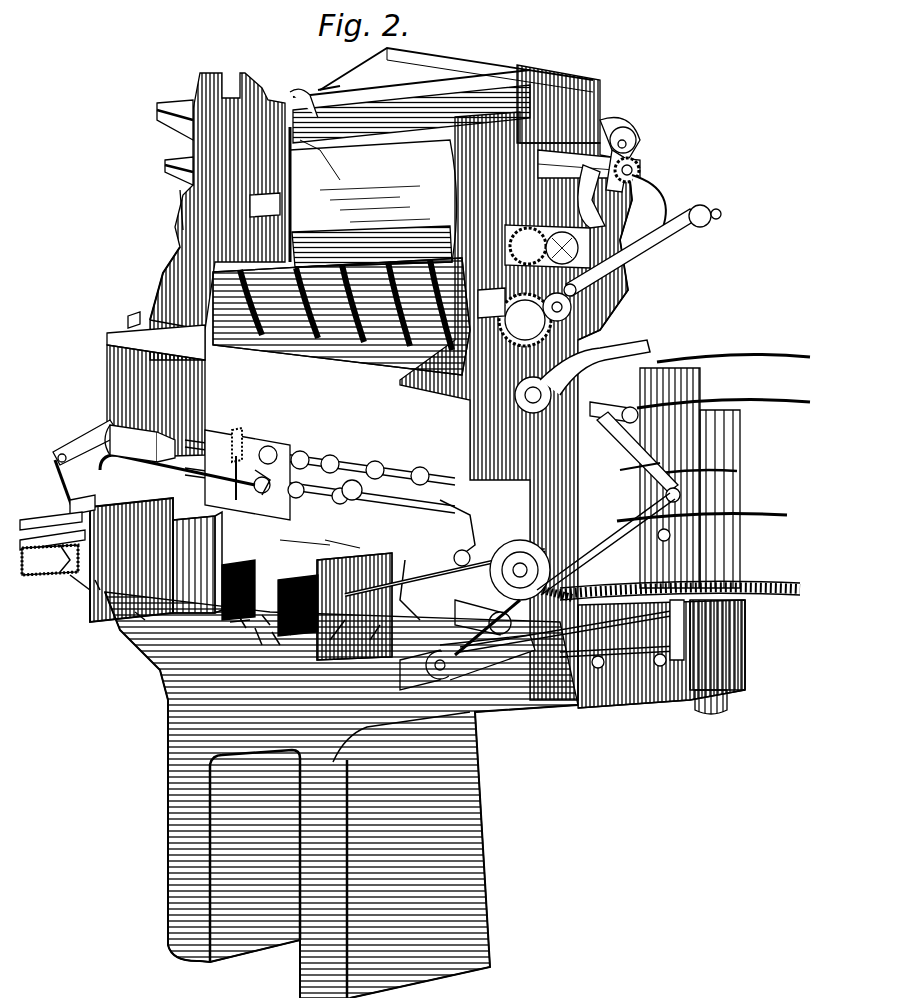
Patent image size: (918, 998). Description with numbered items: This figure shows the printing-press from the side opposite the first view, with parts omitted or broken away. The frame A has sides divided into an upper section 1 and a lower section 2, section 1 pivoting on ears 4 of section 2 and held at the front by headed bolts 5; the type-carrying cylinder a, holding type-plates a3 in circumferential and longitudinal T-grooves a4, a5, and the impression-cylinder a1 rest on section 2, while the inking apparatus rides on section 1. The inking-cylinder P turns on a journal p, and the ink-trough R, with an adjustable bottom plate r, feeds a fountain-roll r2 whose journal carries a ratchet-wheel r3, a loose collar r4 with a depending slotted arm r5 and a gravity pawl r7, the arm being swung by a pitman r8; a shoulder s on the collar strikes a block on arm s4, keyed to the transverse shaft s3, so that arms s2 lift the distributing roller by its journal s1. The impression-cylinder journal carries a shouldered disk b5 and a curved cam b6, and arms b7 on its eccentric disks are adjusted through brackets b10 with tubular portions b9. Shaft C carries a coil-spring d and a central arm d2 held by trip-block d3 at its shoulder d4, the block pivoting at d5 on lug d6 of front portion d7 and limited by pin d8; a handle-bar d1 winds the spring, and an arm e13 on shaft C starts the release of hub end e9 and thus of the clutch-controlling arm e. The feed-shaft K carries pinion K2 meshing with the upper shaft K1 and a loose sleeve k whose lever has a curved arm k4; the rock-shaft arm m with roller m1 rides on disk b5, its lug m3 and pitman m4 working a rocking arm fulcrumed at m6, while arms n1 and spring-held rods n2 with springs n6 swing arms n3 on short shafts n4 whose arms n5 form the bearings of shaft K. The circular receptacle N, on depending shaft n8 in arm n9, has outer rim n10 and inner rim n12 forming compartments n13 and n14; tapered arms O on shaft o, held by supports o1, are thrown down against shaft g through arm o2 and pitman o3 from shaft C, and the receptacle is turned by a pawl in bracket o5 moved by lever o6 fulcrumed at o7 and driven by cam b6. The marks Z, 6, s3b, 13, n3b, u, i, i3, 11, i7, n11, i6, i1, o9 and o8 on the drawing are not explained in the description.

The journal p is at (190, 190).
The upper section 1 is at (180, 205).
The type-carrying cylinder a is at (176, 262).
The ears 4 is at (150, 300).
The headed bolts 5 is at (128, 318).
The lower section 2 is at (110, 345).
The ink-trough R is at (460, 90).
The arms s2 is at (285, 98).
The shoulder s is at (300, 92).
The fountain-roll r2 is at (322, 88).
The inking-cylinder P is at (373, 197).
The transverse shaft s3 is at (320, 167).
The type-plates a3 is at (341, 316).
The circumferential T-grooves a4 is at (308, 312).
The longitudinal T-grooves a5 is at (420, 355).
The impression-cylinder a1 is at (390, 350).
The frame plate Z is at (608, 310).
The plate r is at (650, 316).
The journal s1 is at (622, 130).
The pivot 6 is at (634, 130).
The pawl r7 is at (640, 142).
The loose collar r4 is at (632, 146).
The ratchet-wheel r3 is at (640, 166).
The slotted arm r5 is at (648, 185).
The arm s4 is at (612, 212).
The gear s3b is at (560, 212).
The pitman r8 is at (645, 243).
The gear wheel 13 is at (575, 305).
The feed-shaft K is at (360, 476).
The upper shaft K1 is at (372, 492).
The pinion K2 is at (312, 500).
The upper short arm k4 is at (282, 470).
The sleeve k is at (252, 505).
The arm b7 is at (271, 480).
The fulcrum m6 is at (305, 551).
The bar n3b is at (342, 551).
The handle-bar d1 is at (131, 560).
The plate u is at (197, 562).
The pin d8 is at (177, 493).
The block i is at (354, 606).
The roller i3 is at (400, 500).
The cam or shouldered disk b5 is at (457, 511).
The curved cam b6 is at (458, 535).
The arm m is at (426, 578).
The rod 11 is at (445, 572).
The disk i7 is at (532, 540).
The roller m1 is at (483, 605).
The arms n1 is at (414, 670).
The spring-held rods n2 is at (457, 656).
The link n11 is at (484, 646).
The plate i6 is at (337, 648).
The plate i1 is at (372, 650).
The shaft C is at (298, 648).
The rod or pitman m4 is at (231, 640).
The lug m3 is at (254, 643).
The pivot d5 is at (222, 616).
The lug or projection d6 is at (215, 620).
The shoulder d4 is at (240, 630).
The arm d2 is at (268, 632).
The front portion d7 is at (140, 592).
The trip-block d3 is at (165, 637).
The short shafts n4 is at (90, 428).
The short arms n5 is at (112, 428).
The arms n3 is at (56, 456).
The springs n6 is at (70, 502).
The clutch-controlling arm e is at (70, 510).
The tubular portions b9 is at (62, 528).
The hub end e9 is at (55, 578).
The brackets b10 is at (69, 552).
The coil-spring d is at (52, 580).
The arm e13 is at (84, 578).
The frame A is at (341, 795).
The outwardly-extended arm n9 is at (642, 669).
The central depending shaft n8 is at (716, 668).
The receptacle N is at (733, 346).
The compartment n14 is at (723, 420).
The inner circular rim n12 is at (698, 488).
The compartment n13 is at (702, 503).
The outer rim n10 is at (680, 575).
The shaft o is at (560, 430).
The depending supports o1 is at (640, 425).
The arm o2 is at (676, 488).
The tapered arms O is at (669, 458).
The shaft g is at (612, 540).
The pitman o3 is at (672, 536).
The fulcrum o7 is at (590, 584).
The bracket o5 is at (568, 637).
The lever o6 is at (622, 639).
The pin o9 is at (570, 674).
The pin o8 is at (694, 643).